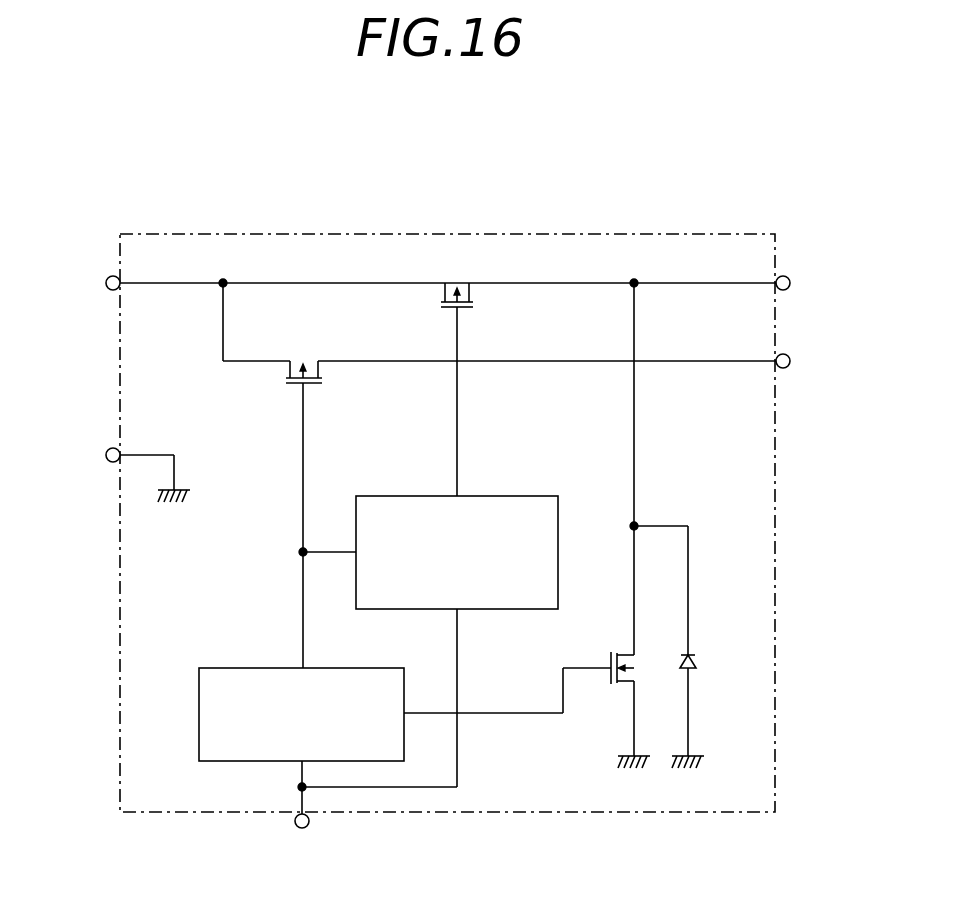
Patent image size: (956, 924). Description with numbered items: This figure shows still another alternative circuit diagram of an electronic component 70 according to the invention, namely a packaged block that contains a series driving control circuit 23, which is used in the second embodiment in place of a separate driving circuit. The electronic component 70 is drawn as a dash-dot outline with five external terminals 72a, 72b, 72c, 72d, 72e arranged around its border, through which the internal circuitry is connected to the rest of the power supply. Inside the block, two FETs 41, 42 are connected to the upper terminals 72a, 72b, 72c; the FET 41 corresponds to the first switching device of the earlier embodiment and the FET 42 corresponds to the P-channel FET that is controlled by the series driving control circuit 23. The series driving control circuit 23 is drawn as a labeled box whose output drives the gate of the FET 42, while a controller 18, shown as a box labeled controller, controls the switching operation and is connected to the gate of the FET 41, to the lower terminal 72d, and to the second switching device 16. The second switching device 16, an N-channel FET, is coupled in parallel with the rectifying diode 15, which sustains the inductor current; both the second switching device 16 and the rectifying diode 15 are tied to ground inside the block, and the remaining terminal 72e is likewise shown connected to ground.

The electronic component 70 is at (503, 170).
The terminal 72a is at (106, 278).
The terminal 72b is at (790, 278).
The terminal 72c is at (790, 356).
The terminal 72d is at (304, 829).
The terminal 72e is at (106, 450).
The FET 41 is at (290, 369).
The FET 42 is at (470, 289).
The series driving control circuit 23 is at (398, 495).
The controller 18 is at (243, 667).
The second switching device 16 is at (620, 684).
The rectifying diode 15 is at (696, 656).